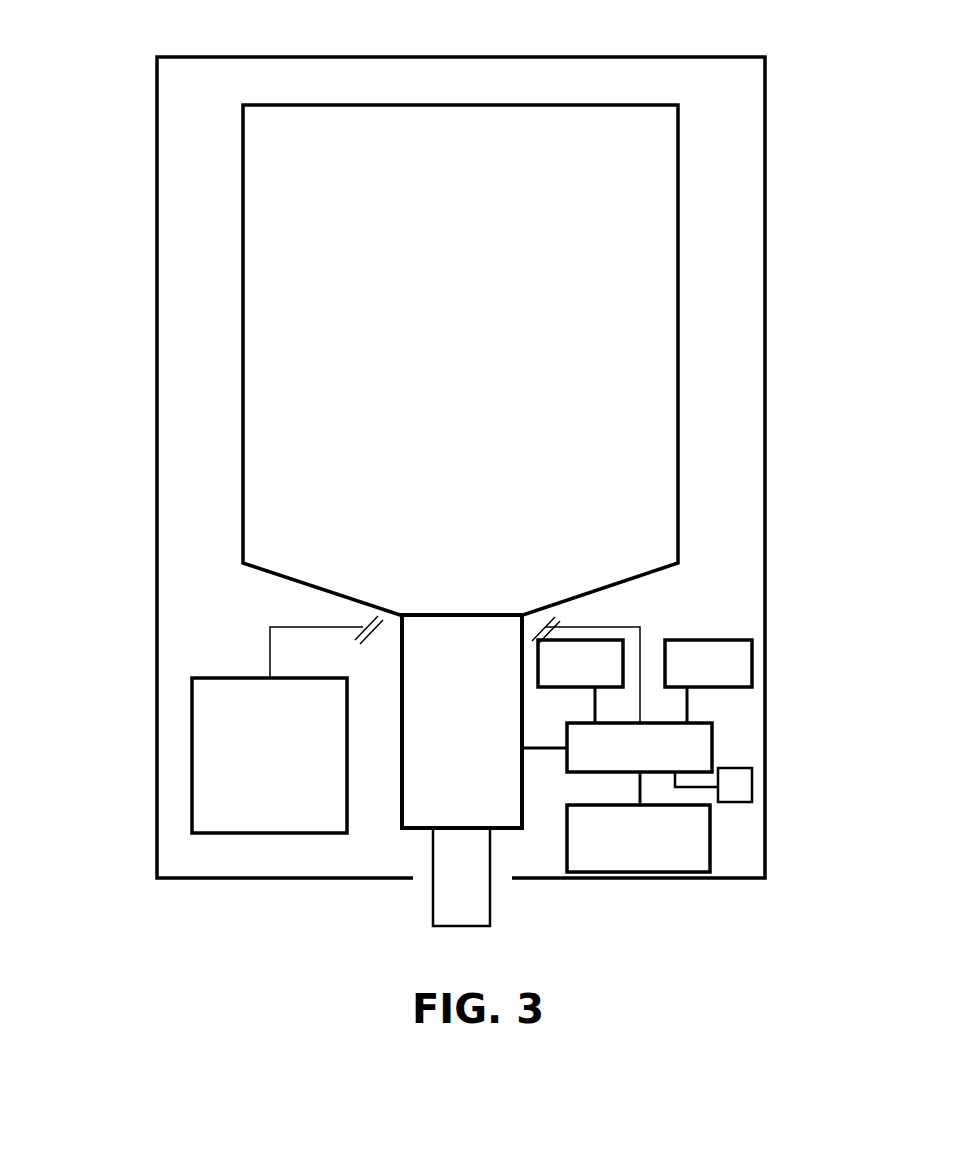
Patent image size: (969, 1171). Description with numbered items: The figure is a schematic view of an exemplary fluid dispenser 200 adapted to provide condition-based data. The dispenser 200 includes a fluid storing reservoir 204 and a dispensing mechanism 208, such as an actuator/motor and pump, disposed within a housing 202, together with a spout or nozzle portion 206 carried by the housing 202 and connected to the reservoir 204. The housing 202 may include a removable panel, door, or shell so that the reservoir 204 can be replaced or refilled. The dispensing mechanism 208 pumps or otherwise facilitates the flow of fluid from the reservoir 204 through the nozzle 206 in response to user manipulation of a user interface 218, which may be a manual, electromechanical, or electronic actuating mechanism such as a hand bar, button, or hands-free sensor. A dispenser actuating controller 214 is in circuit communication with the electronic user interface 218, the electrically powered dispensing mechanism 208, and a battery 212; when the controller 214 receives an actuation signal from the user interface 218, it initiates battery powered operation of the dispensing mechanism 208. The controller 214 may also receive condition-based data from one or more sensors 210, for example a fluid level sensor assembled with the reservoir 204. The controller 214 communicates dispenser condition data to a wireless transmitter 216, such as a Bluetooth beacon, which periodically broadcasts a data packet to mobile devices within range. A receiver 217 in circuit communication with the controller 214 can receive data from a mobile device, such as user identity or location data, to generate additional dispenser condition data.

The dispenser 200 is at (107, 42).
The housing 202 is at (765, 120).
The fluid storing reservoir 204 is at (680, 262).
The spout or nozzle portion 206 is at (490, 926).
The dispensing mechanism 208 is at (400, 828).
The sensor 210 is at (608, 640).
The battery 212 is at (752, 660).
The dispenser actuating controller 214 is at (712, 748).
The wireless transmitter 216 is at (663, 870).
The receiver 217 is at (752, 781).
The user interface 218 is at (192, 773).